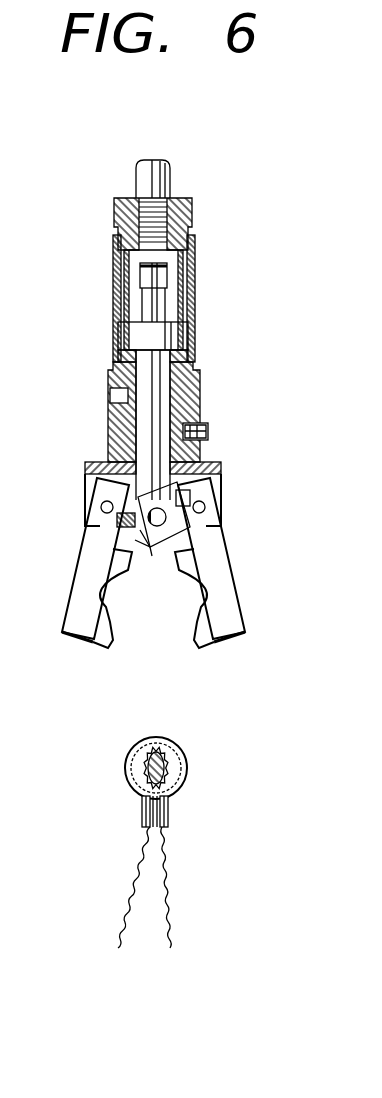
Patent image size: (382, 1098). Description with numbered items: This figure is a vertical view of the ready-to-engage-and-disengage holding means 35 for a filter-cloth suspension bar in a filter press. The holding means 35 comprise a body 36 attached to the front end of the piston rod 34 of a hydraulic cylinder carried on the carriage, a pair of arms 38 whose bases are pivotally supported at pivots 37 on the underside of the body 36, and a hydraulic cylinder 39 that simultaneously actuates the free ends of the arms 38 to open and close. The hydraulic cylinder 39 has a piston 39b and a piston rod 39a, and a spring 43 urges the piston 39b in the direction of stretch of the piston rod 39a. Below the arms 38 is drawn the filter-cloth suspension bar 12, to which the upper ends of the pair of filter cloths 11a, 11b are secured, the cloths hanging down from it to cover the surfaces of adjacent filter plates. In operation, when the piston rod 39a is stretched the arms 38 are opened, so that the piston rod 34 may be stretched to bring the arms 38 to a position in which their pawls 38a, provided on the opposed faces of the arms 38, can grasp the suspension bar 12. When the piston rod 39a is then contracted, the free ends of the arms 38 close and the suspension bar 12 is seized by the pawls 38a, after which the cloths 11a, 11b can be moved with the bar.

The piston rod 34 is at (133, 190).
The filter-cloth suspension-bar holding means 35 is at (224, 183).
The body 36 is at (257, 283).
The spring 43 is at (123, 277).
The hydraulic cylinder 39 is at (200, 368).
The piston rod 39a is at (153, 405).
The piston 39b is at (132, 333).
The pivot 37 is at (101, 505).
The arms 38 is at (87, 573).
The pawls 38a is at (197, 597).
The filter-cloth suspension bar 12 is at (152, 738).
The filter cloth 11a is at (142, 862).
The filter cloth 11b is at (166, 868).